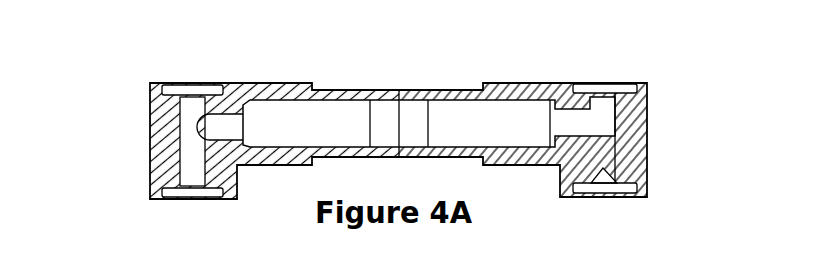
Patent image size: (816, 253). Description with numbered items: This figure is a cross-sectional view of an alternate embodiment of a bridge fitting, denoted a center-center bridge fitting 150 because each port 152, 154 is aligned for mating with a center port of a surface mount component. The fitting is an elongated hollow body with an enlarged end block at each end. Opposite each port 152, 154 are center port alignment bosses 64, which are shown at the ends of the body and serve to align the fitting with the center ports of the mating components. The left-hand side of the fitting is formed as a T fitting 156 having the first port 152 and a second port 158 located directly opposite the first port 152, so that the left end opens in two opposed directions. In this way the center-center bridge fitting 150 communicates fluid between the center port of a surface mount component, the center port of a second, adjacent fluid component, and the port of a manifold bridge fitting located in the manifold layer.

The center-center bridge fitting 150 is at (386, 72).
The first port 152 is at (197, 83).
The port 154 is at (603, 83).
The T fitting 156 is at (165, 133).
The second port 158 is at (185, 190).
The center port alignment boss 64 is at (238, 182).